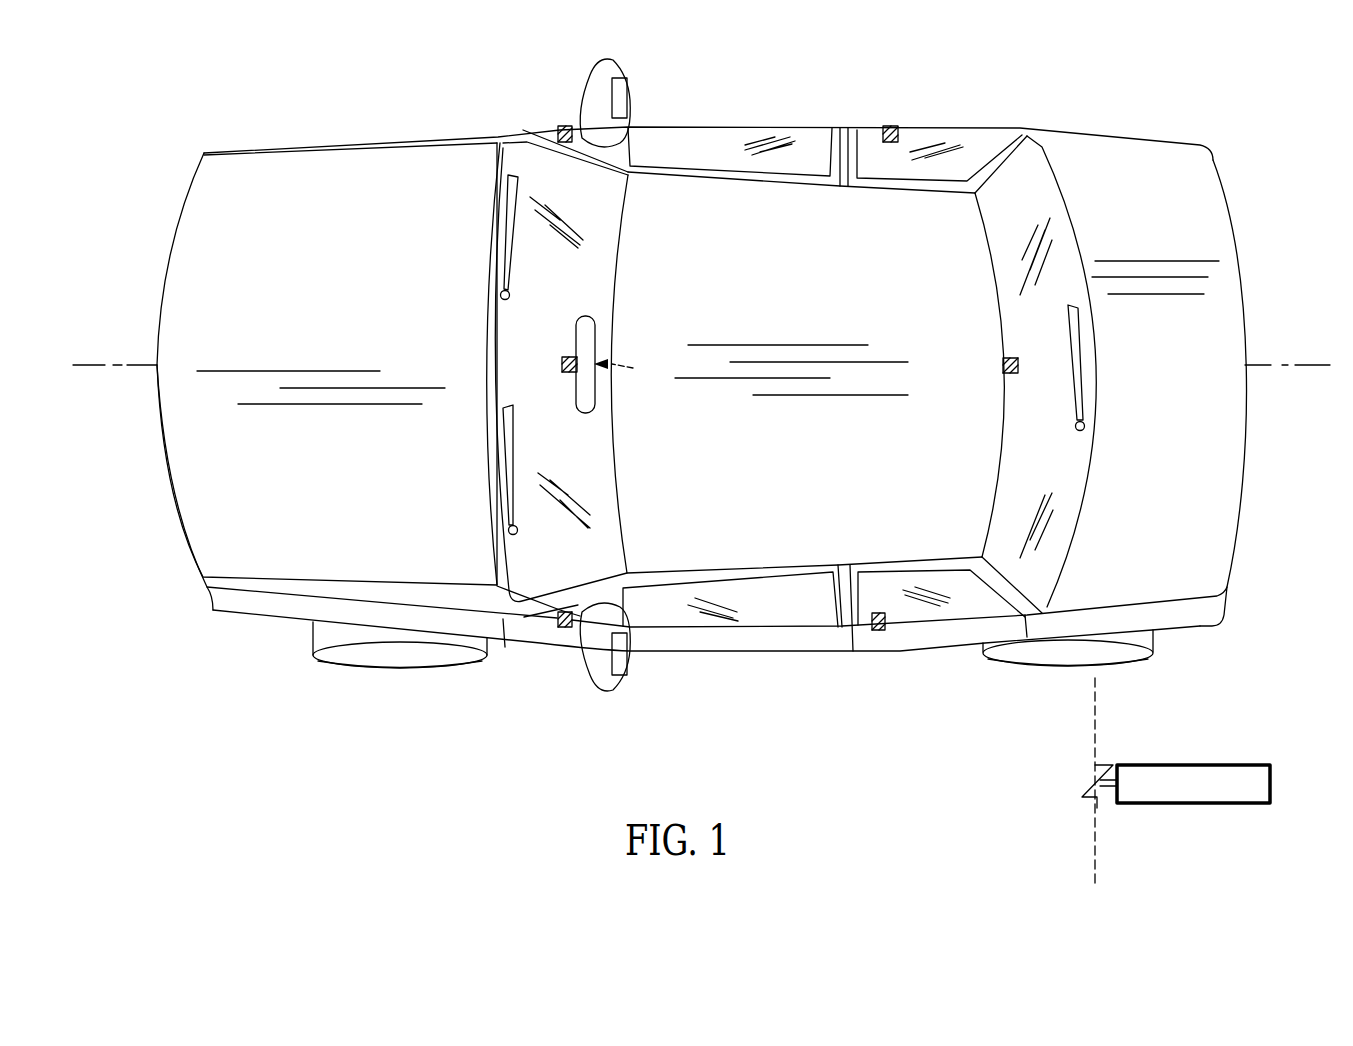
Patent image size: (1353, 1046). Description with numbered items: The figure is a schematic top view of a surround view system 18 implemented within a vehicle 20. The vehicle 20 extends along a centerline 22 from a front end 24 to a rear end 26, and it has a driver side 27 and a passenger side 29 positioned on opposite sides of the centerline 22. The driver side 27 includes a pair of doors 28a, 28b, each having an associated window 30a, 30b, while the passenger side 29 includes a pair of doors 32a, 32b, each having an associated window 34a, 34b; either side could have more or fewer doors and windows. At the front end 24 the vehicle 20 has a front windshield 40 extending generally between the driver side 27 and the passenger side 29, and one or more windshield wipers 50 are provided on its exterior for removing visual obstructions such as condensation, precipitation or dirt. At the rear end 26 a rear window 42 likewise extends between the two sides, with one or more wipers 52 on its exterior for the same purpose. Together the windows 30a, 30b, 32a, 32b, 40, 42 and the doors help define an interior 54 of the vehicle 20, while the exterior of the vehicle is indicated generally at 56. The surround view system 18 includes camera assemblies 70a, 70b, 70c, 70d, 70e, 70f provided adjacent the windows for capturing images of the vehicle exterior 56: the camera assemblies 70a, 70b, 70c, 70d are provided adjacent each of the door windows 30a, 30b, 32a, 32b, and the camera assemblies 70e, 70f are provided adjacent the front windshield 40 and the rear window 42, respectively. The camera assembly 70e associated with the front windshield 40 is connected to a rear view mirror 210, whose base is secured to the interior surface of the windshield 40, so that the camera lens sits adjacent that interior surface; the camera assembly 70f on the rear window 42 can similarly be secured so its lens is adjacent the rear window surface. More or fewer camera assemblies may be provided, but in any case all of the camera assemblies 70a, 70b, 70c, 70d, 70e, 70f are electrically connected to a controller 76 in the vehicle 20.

The surround view system 18 is at (1178, 80).
The vehicle 20 is at (1213, 228).
The centerline 22 is at (104, 363).
The front end 24 is at (165, 614).
The rear end 26 is at (1235, 647).
The driver side 27 is at (796, 654).
The door 28a is at (695, 641).
The door 28b is at (950, 632).
The passenger side 29 is at (748, 124).
The window 30a is at (738, 603).
The window 30b is at (893, 600).
The door 32a is at (668, 127).
The door 32b is at (952, 128).
The window 34a is at (763, 162).
The window 34b is at (907, 157).
The front windshield 40 is at (555, 459).
The rear window 42 is at (1050, 459).
The windshield wiper 50 is at (506, 242).
The wiper 52 is at (1086, 398).
The interior 54 is at (719, 196).
The exterior 56 is at (222, 692).
The camera assembly 70a is at (563, 630).
The camera assembly 70b is at (879, 633).
The camera assembly 70c is at (565, 126).
The camera assembly 70d is at (891, 125).
The camera assembly 70e is at (561, 362).
The camera assembly 70f is at (1002, 372).
The controller 76 is at (1270, 783).
The rear view mirror 210 is at (623, 364).